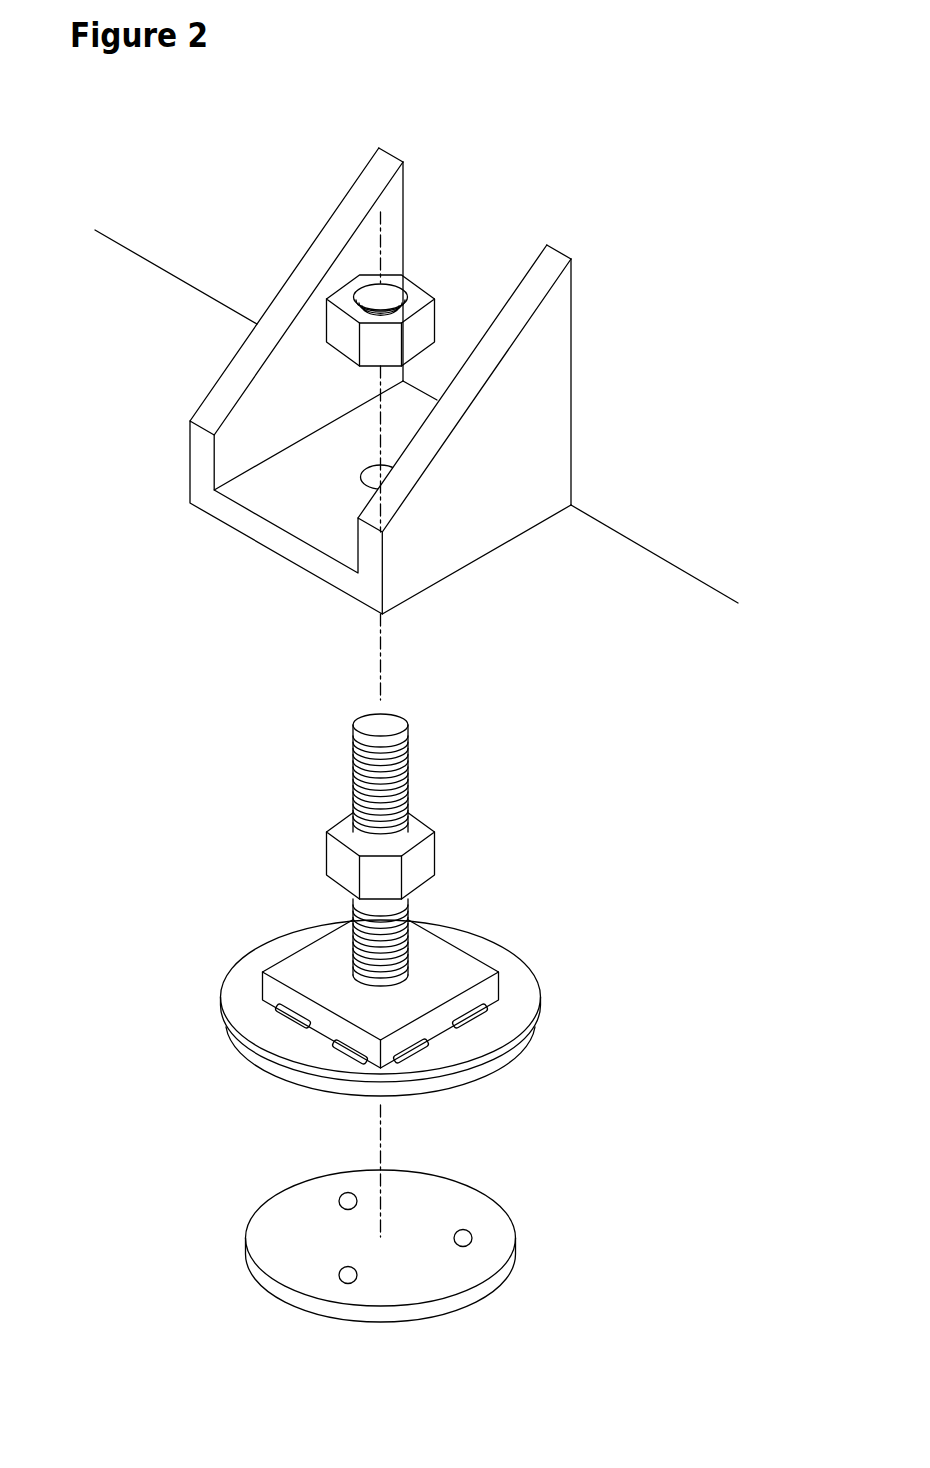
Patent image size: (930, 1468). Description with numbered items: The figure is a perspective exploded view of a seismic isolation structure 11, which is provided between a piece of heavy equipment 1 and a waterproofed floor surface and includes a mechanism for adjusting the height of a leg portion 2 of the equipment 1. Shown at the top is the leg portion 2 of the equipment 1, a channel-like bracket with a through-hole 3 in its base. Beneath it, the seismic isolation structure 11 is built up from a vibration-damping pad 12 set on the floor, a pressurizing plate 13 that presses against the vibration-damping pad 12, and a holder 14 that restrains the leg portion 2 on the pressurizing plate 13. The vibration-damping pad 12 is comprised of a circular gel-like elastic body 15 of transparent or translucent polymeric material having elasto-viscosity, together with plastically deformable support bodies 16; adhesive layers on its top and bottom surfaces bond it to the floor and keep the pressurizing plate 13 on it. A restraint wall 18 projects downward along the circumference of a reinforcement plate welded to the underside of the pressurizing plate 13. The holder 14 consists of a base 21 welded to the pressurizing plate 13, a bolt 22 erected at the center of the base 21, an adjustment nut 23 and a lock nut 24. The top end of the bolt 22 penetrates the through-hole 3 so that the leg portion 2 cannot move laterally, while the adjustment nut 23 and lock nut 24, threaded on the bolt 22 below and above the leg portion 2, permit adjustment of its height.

The equipment 1 is at (167, 272).
The leg portion 2 is at (262, 547).
The through-hole 3 is at (357, 478).
The lock nut 24 is at (420, 287).
The seismic isolation structure 11 is at (218, 877).
The holder 14 is at (420, 801).
The bolt 22 is at (353, 770).
The adjustment nut 23 is at (425, 852).
The base 21 is at (307, 962).
The pressurizing plate 13 is at (517, 988).
The restraint wall 18 is at (298, 1076).
The vibration-damping pad 12 is at (255, 1210).
The gel-like elastic body 15 is at (472, 1207).
The support body 16 is at (351, 1282).